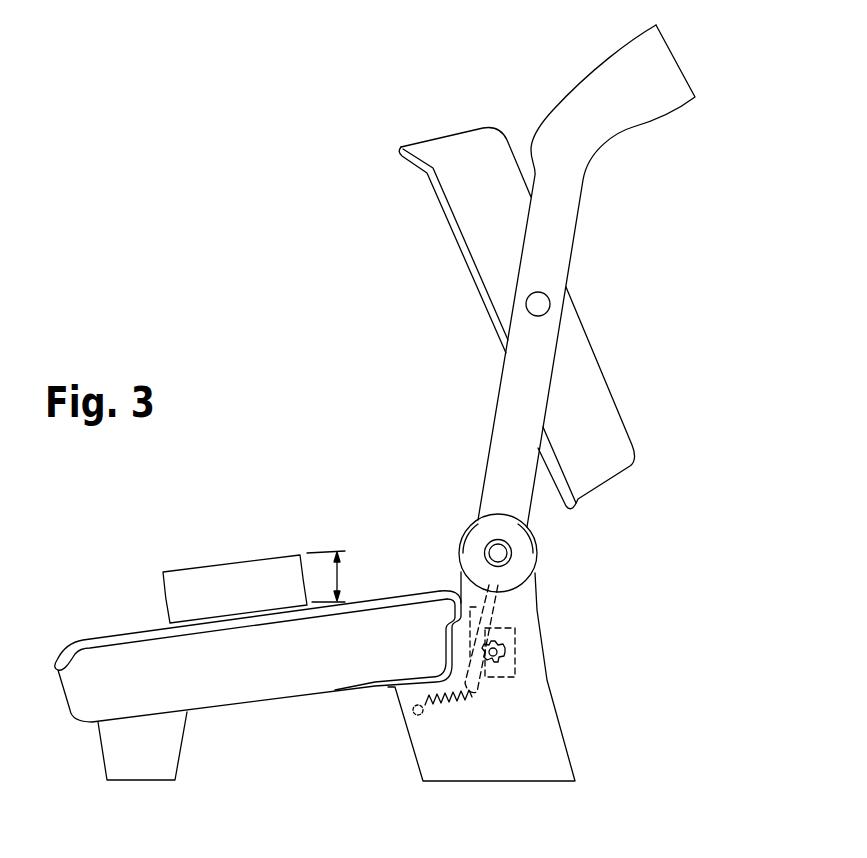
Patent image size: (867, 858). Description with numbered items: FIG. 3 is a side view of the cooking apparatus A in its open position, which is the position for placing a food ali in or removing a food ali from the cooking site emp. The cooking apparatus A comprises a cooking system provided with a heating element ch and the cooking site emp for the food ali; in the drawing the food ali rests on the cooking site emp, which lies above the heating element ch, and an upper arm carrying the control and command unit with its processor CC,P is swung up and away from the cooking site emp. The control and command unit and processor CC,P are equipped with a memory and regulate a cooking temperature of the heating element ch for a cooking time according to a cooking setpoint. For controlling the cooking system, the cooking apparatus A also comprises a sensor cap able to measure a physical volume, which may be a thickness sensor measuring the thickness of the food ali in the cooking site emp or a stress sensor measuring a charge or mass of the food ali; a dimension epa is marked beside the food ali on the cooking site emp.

The control and command unit with processor CC,P is at (607, 77).
The cooking apparatus A is at (628, 368).
The food ali is at (227, 582).
The thickness dimension epa is at (338, 573).
The cooking site emp is at (126, 634).
The heating element ch is at (252, 680).
The sensor cap is at (537, 652).